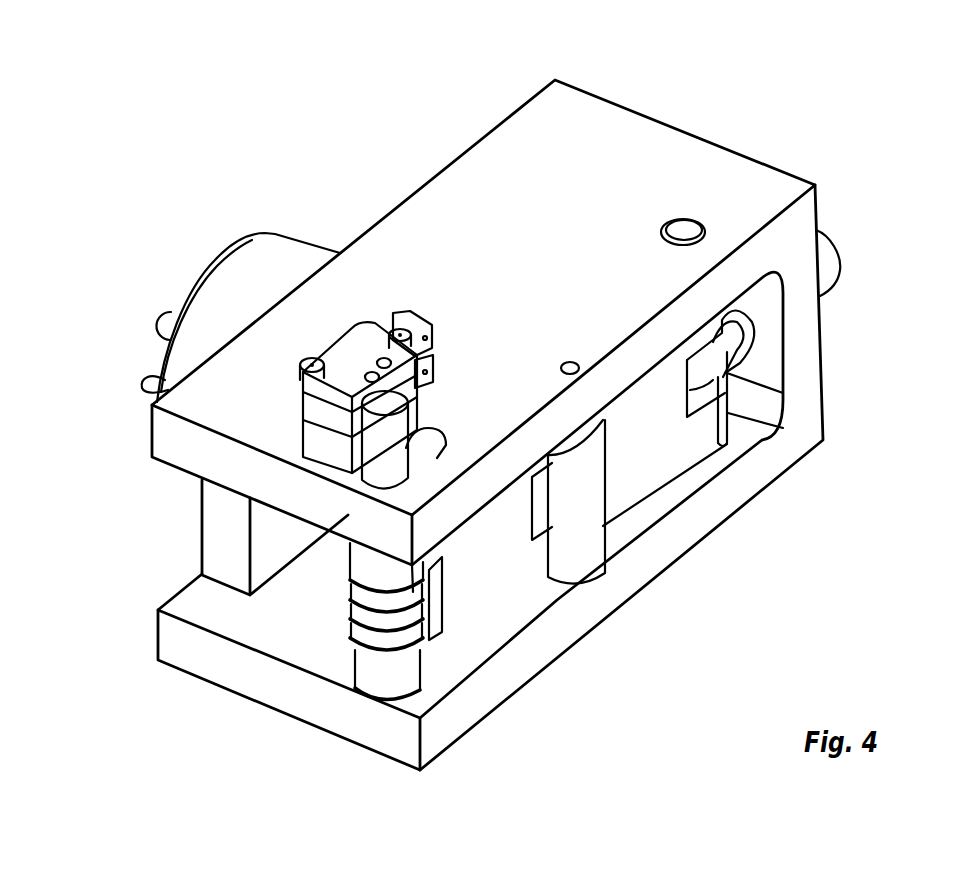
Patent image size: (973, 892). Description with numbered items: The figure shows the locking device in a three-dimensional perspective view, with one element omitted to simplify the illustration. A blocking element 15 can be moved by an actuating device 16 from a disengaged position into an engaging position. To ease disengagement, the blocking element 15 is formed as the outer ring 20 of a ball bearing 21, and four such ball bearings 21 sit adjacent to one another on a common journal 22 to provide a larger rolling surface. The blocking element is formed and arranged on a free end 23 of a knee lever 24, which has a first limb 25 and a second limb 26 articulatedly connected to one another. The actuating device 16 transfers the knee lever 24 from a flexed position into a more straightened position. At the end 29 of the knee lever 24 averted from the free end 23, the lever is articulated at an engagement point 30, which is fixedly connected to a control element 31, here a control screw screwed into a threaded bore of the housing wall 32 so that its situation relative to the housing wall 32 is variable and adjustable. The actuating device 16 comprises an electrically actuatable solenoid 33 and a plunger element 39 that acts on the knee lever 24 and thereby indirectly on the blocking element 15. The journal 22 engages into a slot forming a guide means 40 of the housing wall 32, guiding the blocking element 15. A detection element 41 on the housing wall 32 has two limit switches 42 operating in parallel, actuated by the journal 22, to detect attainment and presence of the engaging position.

The blocking element 15 is at (435, 660).
The actuating device 16 is at (878, 86).
The outer ring 20 is at (350, 585).
The ball bearing 21 is at (385, 663).
The journal 22 is at (377, 455).
The free end 23 is at (436, 704).
The knee lever 24 is at (667, 448).
The first limb 25 is at (515, 578).
The second limb 26 is at (660, 497).
The end 29 is at (738, 460).
The engagement point 30 is at (683, 232).
The control element 31 is at (824, 278).
The housing wall 32 is at (585, 152).
The solenoid 33 is at (240, 277).
The plunger element 39 is at (153, 318).
The guide means 40 is at (428, 438).
The detection element 41 is at (272, 410).
The limit switches 42 is at (321, 440).